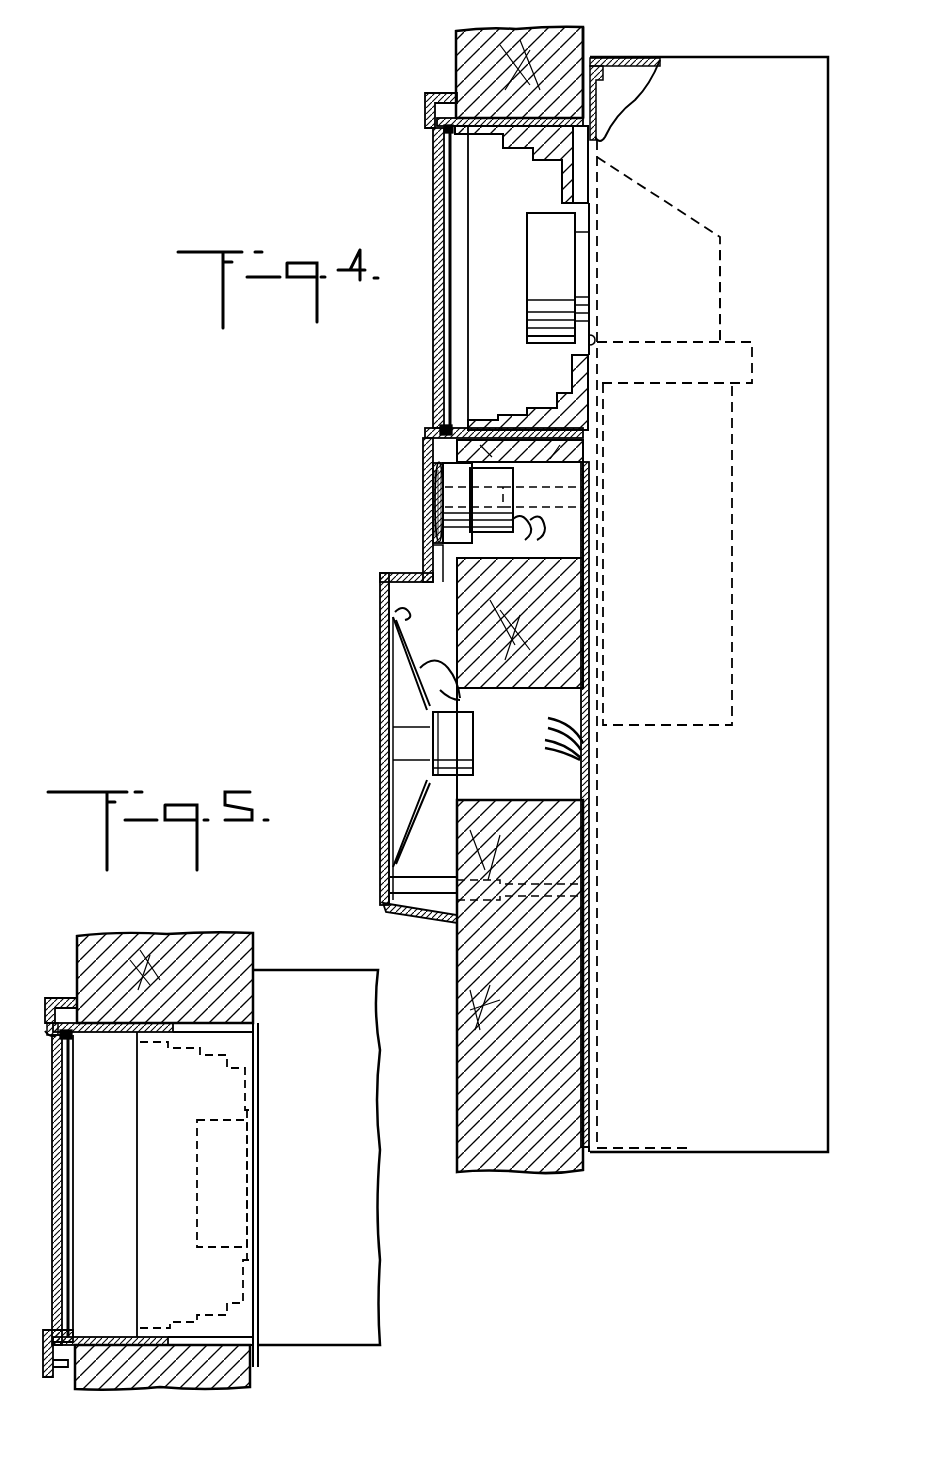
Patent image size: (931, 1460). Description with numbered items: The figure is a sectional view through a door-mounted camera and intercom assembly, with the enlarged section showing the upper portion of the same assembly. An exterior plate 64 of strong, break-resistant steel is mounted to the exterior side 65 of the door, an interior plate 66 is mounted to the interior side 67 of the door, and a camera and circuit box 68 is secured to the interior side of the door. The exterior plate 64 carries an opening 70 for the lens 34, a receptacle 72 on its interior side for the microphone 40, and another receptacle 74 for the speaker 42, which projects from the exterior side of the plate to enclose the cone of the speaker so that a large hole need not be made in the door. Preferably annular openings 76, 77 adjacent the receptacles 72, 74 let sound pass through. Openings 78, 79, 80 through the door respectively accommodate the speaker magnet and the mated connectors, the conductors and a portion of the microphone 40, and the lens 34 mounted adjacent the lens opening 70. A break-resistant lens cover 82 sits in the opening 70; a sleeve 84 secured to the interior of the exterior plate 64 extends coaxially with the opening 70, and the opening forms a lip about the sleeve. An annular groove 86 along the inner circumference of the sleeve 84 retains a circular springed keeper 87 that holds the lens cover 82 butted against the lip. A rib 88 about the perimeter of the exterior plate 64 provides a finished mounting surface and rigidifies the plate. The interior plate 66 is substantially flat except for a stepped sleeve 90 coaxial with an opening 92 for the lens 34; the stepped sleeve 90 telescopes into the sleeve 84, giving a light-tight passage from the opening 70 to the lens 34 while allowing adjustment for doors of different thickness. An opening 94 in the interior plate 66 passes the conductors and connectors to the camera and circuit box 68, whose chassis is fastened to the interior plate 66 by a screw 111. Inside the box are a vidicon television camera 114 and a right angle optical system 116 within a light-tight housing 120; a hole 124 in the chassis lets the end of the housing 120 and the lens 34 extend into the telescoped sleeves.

In FIG. 4, the lens 34 is at (552, 337).
In FIG. 4, the microphone 40 is at (440, 470).
In FIG. 4, the speaker 42 is at (398, 609).
In FIG. 4, the exterior plate 64 is at (378, 577).
In FIG. 4, the exterior side 65 is at (455, 60).
In FIG. 4, the interior plate 66 is at (583, 1025).
In FIG. 4, the interior side 67 is at (583, 38).
In FIG. 4, the camera and circuit box 68 is at (806, 583).
In FIG. 4, the opening 70 is at (460, 383).
In FIG. 5, the opening 70 is at (90, 1290).
In FIG. 4, the receptacle 72 is at (428, 437).
In FIG. 4, the receptacle 74 is at (403, 573).
In FIG. 4, the opening 76 is at (427, 532).
In FIG. 4, the opening 77 is at (380, 691).
In FIG. 4, the opening 78 is at (567, 774).
In FIG. 4, the opening 79 is at (570, 548).
In FIG. 4, the opening 80 is at (552, 175).
In FIG. 4, the lens cover 82 is at (433, 351).
In FIG. 5, the lens cover 82 is at (55, 1145).
In FIG. 5, the sleeve 84 is at (117, 1033).
In FIG. 5, the annular groove 86 is at (50, 1035).
In FIG. 5, the circular springed keeper 87 is at (70, 1040).
In FIG. 5, the rib 88 is at (60, 998).
In FIG. 4, the stepped sleeve 90 is at (548, 147).
In FIG. 4, the opening 92 is at (583, 213).
In FIG. 4, the opening 94 is at (585, 758).
In FIG. 4, the screw 111 is at (593, 1112).
In FIG. 4, the vidicon television camera 114 is at (720, 636).
In FIG. 4, the right angle optical system 116 is at (762, 220).
In FIG. 4, the light-tight housing 120 is at (703, 288).
In FIG. 4, the hole 124 is at (598, 337).